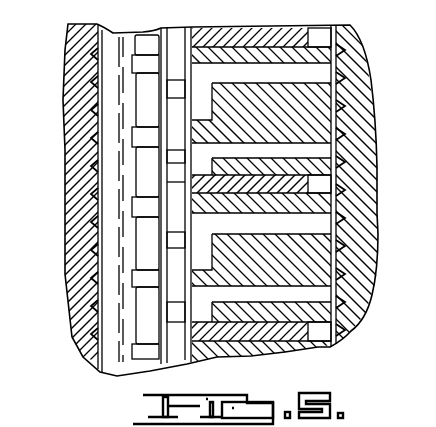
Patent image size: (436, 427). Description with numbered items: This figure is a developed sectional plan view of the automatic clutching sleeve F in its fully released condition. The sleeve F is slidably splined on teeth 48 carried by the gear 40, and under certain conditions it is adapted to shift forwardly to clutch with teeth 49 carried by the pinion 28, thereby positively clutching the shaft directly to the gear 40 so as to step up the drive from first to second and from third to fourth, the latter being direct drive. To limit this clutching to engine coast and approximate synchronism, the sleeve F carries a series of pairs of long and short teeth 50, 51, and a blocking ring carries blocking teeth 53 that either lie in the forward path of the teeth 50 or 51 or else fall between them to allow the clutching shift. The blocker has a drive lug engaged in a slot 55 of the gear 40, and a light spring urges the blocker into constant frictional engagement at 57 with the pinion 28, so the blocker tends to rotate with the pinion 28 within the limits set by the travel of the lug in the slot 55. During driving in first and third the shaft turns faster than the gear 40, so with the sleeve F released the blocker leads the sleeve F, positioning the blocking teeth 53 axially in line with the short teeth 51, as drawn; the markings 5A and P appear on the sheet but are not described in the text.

The pinion 28 is at (68, 103).
The gear 40 is at (360, 116).
The teeth 48 is at (300, 30).
The teeth 49 is at (142, 62).
The long teeth 50 is at (198, 135).
The short teeth 51 is at (219, 88).
The blocking teeth 53 is at (186, 236).
The slot 55 is at (258, 162).
The frictional engagement 57 is at (184, 26).
The section line 5A is at (213, 182).
The pressure chamber P is at (325, 100).